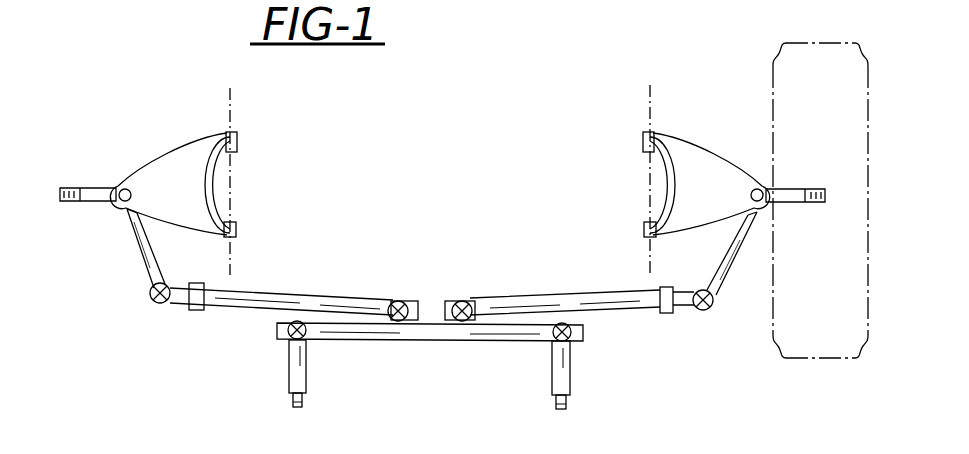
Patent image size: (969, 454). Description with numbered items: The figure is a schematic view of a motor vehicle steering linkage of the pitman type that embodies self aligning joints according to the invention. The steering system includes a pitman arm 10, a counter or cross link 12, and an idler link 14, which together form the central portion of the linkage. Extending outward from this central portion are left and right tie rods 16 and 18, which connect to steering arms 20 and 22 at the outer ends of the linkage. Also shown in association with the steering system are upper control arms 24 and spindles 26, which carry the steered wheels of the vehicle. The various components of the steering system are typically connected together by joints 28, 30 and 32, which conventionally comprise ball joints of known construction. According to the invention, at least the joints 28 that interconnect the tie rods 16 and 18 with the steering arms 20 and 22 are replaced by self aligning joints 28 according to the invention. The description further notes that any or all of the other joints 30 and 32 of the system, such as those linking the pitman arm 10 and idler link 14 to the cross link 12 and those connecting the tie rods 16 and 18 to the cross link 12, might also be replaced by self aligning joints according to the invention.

The pitman arm 10 is at (290, 365).
The cross link 12 is at (436, 336).
The idler link 14 is at (570, 373).
The left tie rod 16 is at (310, 300).
The right tie rod 18 is at (577, 297).
The steering arm 20 is at (133, 238).
The steering arm 22 is at (723, 280).
The upper control arm 24 is at (187, 152).
The spindle 26 is at (93, 190).
The self aligning joint 28 is at (150, 300).
The joint 30 is at (307, 328).
The joint 32 is at (460, 302).